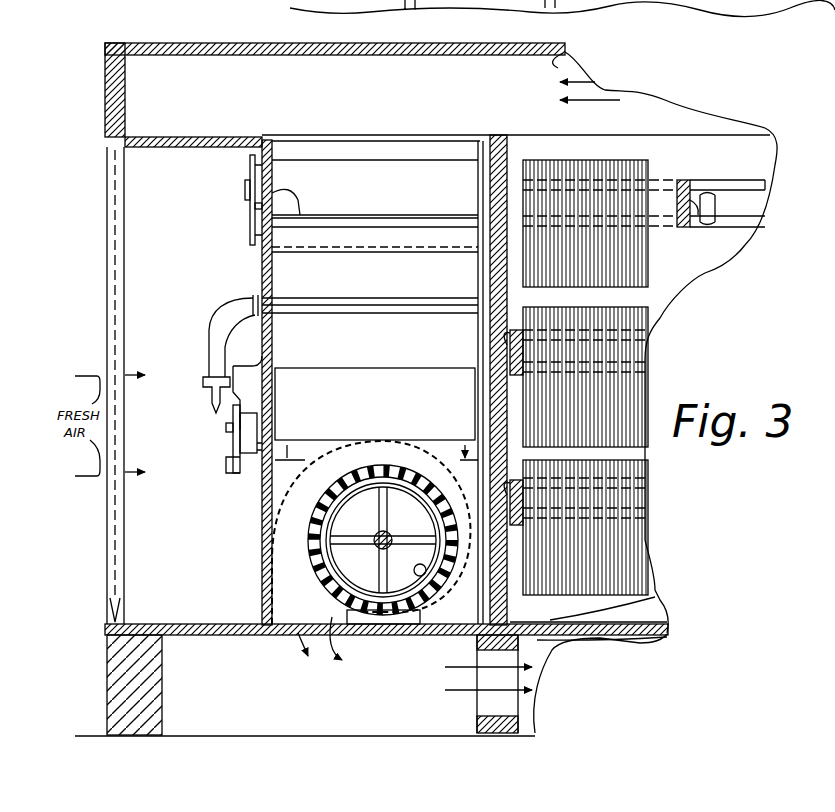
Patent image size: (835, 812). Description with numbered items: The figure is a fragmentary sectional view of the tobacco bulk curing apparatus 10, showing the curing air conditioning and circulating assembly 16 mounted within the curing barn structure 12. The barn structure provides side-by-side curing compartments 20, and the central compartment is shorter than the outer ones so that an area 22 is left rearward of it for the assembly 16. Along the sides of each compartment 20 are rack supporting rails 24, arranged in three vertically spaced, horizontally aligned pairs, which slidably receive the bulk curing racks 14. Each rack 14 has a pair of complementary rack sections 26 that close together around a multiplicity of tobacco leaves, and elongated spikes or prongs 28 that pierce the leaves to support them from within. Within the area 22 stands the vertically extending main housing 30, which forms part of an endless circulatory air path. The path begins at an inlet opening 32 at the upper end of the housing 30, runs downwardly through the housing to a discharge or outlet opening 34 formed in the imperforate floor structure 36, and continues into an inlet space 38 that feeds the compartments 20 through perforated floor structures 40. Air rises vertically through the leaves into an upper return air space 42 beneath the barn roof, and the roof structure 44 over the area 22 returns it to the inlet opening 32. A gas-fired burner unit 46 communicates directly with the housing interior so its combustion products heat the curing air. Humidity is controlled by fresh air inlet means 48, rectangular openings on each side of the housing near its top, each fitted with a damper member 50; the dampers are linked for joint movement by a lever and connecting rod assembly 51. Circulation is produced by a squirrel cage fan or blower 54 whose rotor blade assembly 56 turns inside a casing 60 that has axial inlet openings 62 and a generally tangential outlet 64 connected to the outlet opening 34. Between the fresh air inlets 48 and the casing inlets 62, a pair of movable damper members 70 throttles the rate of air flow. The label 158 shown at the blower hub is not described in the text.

The apparatus 10 is at (150, 38).
The curing barn structure 12 is at (271, 42).
The bulk curing racks 14 is at (692, 166).
The curing air conditioning and circulating assembly 16 is at (252, 272).
The curing compartments 20 is at (516, 150).
The area 22 is at (148, 166).
The rack supporting rails 24 is at (736, 190).
The rack sections 26 is at (510, 193).
The spikes or prongs 28 is at (591, 159).
The main housing 30 is at (268, 362).
The inlet opening 32 is at (276, 138).
The discharge or outlet opening 34 is at (290, 636).
The imperforate floor structure 36 is at (207, 597).
The inlet space 38 is at (665, 638).
The perforated floor structures 40 is at (651, 602).
The upper return air space 42 is at (565, 52).
The roof structure 44 is at (176, 137).
The burner unit 46 is at (447, 197).
The fresh air inlet means 48 is at (262, 195).
The damper member 50 is at (379, 162).
The lever and connecting rod assembly 51 is at (247, 207).
The fan or blower 54 is at (262, 523).
The rotor blade assembly 56 is at (394, 476).
The casing 60 is at (326, 447).
The axial inlet openings 62 is at (431, 577).
The tangential outlet 64 is at (347, 612).
The damper members 70 is at (431, 447).
The blower shaft 158 is at (390, 535).